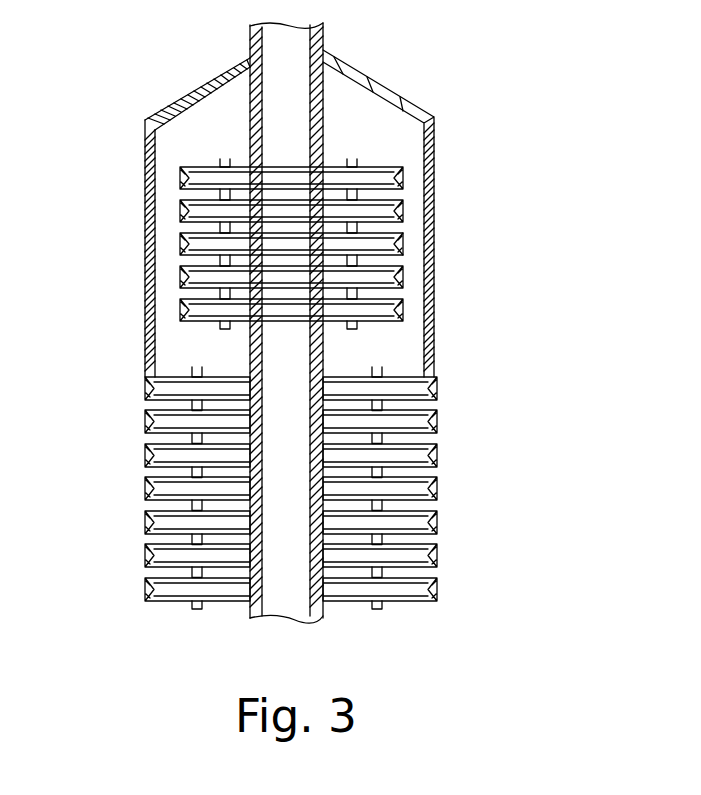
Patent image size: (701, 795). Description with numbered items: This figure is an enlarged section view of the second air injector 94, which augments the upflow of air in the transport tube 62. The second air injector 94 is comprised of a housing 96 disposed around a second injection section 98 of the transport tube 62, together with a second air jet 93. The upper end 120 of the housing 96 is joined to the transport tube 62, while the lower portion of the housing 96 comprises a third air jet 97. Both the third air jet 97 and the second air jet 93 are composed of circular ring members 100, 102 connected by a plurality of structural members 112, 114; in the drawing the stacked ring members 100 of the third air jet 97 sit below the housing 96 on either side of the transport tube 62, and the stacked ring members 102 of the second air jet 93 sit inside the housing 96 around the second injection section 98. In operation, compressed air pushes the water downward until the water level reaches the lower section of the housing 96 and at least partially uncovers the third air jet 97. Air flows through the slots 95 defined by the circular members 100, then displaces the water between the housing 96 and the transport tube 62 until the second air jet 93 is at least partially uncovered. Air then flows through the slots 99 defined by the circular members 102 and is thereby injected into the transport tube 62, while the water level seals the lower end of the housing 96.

The transport tube 62 is at (322, 33).
The upper end of the housing 120 is at (250, 58).
The structural member 114 is at (355, 158).
The second air jet 93 is at (158, 175).
The second air injector 94 is at (261, 193).
The housing 96 is at (327, 203).
The second injection section 98 is at (287, 253).
The slots 99 is at (398, 222).
The circular ring members 102 is at (408, 238).
The structural member 112 is at (378, 367).
The slots 95 is at (147, 437).
The third air jet 97 is at (270, 461).
The circular ring members 100 is at (437, 418).